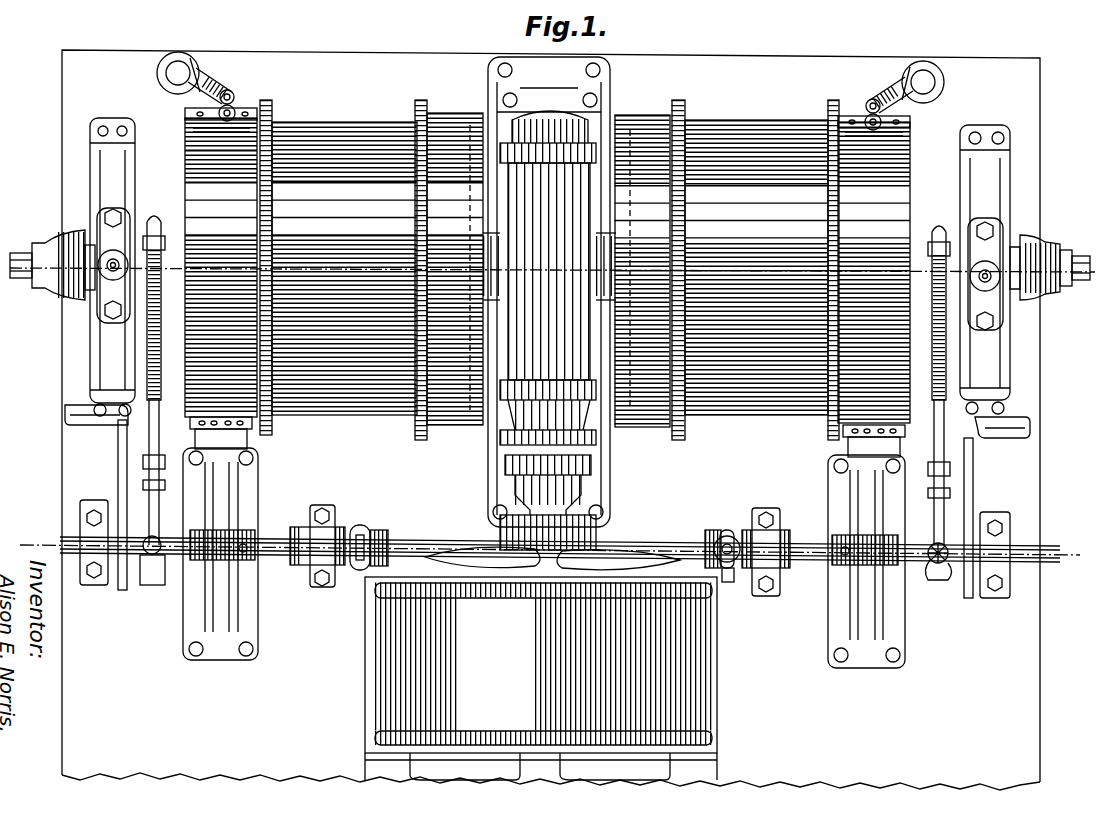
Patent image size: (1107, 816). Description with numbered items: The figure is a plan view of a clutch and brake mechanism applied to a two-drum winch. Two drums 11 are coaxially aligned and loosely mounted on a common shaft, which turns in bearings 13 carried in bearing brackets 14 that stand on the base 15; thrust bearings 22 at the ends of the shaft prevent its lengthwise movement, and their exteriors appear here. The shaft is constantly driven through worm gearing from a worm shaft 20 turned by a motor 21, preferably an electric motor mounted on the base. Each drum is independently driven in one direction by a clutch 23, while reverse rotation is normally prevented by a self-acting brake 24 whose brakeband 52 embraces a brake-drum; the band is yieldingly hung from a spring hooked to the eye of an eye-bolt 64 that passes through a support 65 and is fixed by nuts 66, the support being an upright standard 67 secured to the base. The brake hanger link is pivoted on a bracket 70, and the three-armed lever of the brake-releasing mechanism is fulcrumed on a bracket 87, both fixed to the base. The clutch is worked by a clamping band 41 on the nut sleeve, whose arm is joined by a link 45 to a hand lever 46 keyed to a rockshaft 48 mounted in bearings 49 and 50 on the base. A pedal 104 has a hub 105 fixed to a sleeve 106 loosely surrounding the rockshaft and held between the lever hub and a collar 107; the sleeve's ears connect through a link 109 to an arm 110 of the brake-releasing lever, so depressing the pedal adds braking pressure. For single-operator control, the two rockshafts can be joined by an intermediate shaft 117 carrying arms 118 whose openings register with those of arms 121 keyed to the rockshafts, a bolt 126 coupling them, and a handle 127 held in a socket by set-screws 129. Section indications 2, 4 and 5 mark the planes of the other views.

The section line arrow 2 is at (455, 262).
The section line A-A 4 is at (550, 550).
The section line 5 is at (866, 600).
The drum 11 is at (340, 125).
The bearing 13 is at (88, 232).
The bearing bracket 14 is at (98, 236).
The base 15 is at (1032, 148).
The worm shaft 20 is at (556, 507).
The motor 21 is at (708, 660).
The thrust bearing 22 is at (40, 245).
The clutch 23 is at (371, 264).
The brake 24 is at (552, 84).
The clamping band 41 is at (158, 222).
The link 45 is at (150, 365).
The hand lever 46 is at (150, 560).
The rockshaft 48 is at (270, 538).
The bearing 49 is at (95, 586).
The bearing 50 is at (322, 588).
The brakeband 52 is at (200, 150).
The eye-bolt 64 is at (216, 103).
The support 65 is at (212, 82).
The nut 66 is at (235, 95).
The upright standard 67 is at (167, 73).
The bracket 70 is at (240, 628).
The bracket 87 is at (116, 472).
The pedal 104 is at (98, 420).
The hub 105 is at (160, 586).
The sleeve 106 is at (215, 562).
The collar 107 is at (245, 540).
The link 109 is at (218, 495).
The arm 110 is at (250, 442).
The intermediate shaft 117 is at (616, 545).
The arm 118 is at (367, 538).
The arm 121 is at (305, 570).
The bolt 126 is at (382, 536).
The handle 127 is at (724, 537).
The set-screw 129 is at (728, 582).